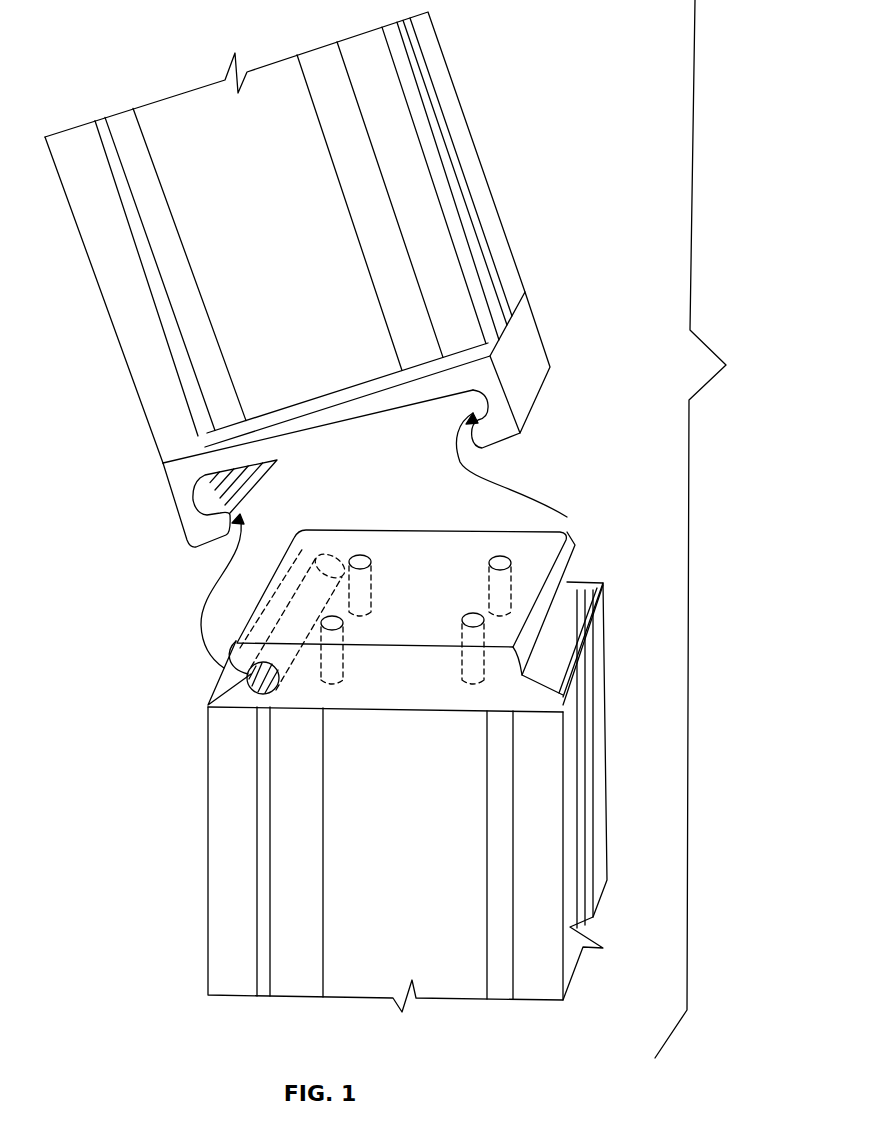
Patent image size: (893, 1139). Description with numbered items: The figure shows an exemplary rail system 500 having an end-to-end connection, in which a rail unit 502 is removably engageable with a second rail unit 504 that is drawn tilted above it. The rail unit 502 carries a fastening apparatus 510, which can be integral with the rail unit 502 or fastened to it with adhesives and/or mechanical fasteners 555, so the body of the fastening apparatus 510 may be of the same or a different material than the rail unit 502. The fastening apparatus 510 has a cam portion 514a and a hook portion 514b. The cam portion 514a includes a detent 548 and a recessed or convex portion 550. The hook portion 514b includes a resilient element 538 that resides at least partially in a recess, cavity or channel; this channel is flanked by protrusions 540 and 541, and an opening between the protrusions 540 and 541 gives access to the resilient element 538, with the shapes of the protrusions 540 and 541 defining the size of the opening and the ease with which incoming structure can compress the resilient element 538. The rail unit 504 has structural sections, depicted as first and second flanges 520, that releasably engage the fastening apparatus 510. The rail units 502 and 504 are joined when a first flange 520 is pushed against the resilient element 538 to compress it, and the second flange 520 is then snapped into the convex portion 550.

The rail system 500 is at (716, 529).
The rail unit 502 is at (207, 828).
The rail unit 504 is at (460, 100).
The fastening apparatus 510 is at (470, 537).
The cam portion 514a is at (578, 518).
The hook portion 514b is at (207, 679).
The flanges 520 is at (507, 428).
The resilient element 538 is at (220, 690).
The protrusion 540 is at (237, 652).
The protrusion 541 is at (233, 702).
The detent 548 is at (571, 540).
The convex portion 550 is at (571, 580).
The mechanical fasteners 555 is at (370, 580).